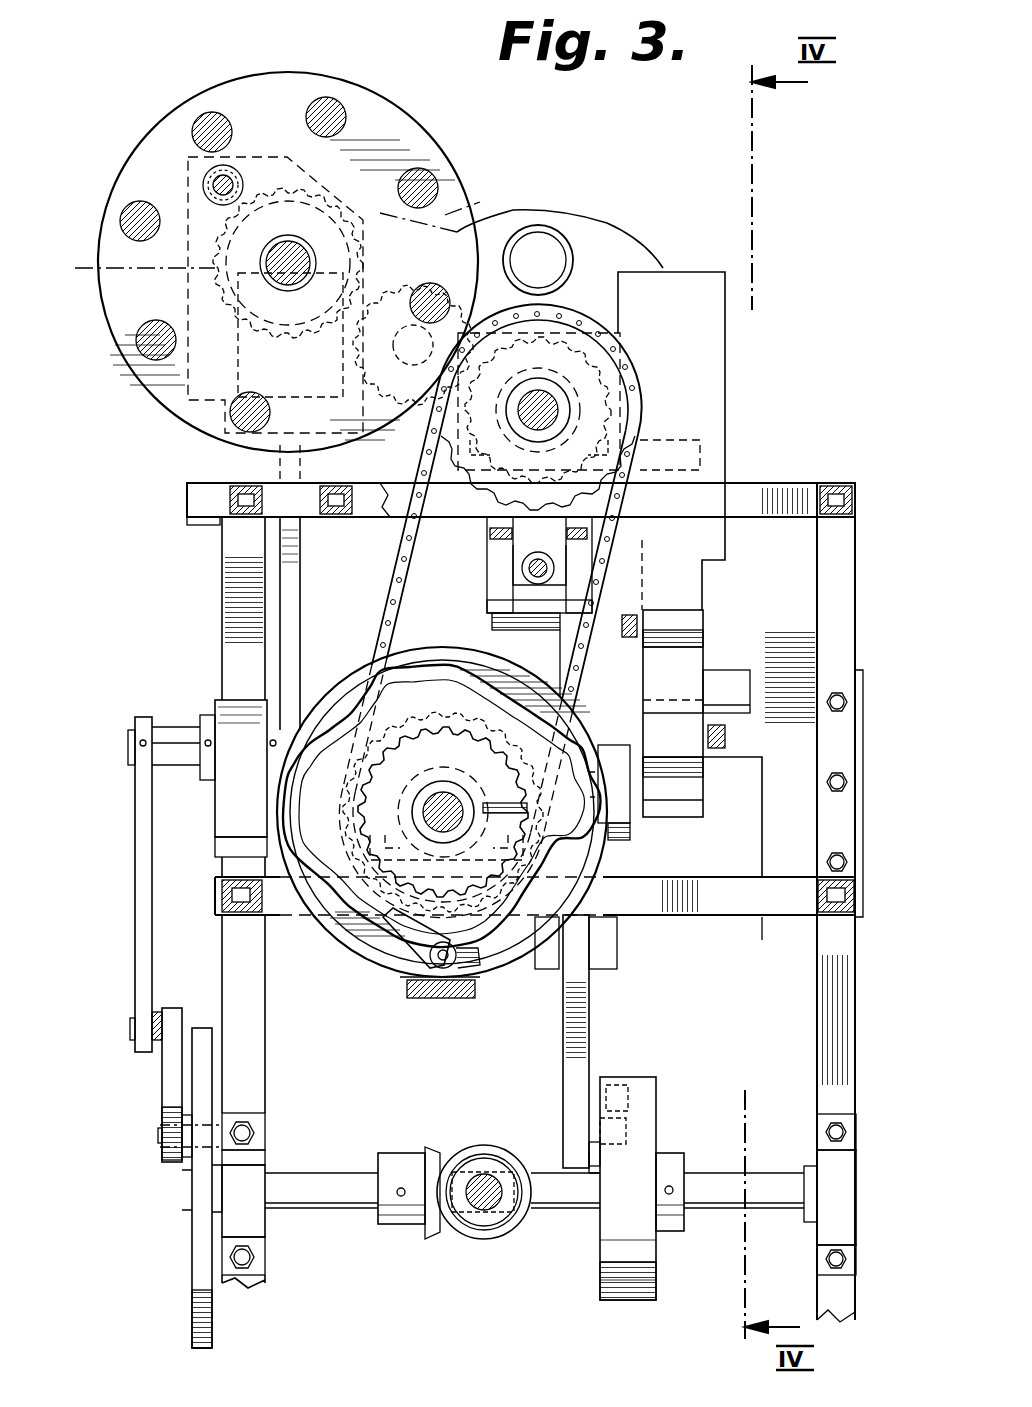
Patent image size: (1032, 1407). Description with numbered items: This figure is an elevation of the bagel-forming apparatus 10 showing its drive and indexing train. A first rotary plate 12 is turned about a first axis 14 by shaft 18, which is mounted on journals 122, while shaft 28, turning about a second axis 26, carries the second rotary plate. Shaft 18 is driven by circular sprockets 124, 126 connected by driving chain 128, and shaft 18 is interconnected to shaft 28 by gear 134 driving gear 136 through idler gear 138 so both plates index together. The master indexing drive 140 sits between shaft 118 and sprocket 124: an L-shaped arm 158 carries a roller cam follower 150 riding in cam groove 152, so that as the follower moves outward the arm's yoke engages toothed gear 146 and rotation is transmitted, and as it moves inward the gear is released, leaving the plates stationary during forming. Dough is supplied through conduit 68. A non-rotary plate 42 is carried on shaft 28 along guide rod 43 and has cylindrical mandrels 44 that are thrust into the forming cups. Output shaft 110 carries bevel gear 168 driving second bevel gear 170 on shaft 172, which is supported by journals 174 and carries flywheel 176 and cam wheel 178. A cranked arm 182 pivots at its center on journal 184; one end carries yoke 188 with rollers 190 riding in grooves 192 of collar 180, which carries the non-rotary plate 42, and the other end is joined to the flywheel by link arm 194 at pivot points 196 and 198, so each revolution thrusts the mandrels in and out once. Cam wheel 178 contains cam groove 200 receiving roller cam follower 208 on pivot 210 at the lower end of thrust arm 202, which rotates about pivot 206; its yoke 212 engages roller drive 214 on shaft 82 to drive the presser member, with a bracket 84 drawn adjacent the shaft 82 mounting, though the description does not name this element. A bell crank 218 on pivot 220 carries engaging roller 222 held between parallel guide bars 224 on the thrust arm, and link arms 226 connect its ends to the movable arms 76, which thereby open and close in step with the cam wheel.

The bagel-forming apparatus 10 is at (826, 444).
The first rotary plate 12 is at (607, 220).
The first axis 14 is at (572, 392).
The shaft 18 is at (562, 410).
The second axis 26 is at (330, 210).
The shaft 28 is at (286, 248).
The non-rotary plate 42 is at (345, 78).
The guide rod 43 is at (224, 180).
The cylindrical mandrels 44 is at (138, 216).
The conduit 68 is at (538, 225).
The movable arms 76 is at (670, 270).
The shaft 82 is at (540, 570).
The bracket 84 is at (540, 537).
The output shaft 110 is at (481, 1175).
The shaft 118 is at (445, 806).
The journals 122 is at (578, 380).
The circular sprocket 124 is at (445, 708).
The circular sprocket 126 is at (640, 462).
The driving chain 128 is at (725, 415).
The gear 134 is at (598, 318).
The gear 136 is at (244, 245).
The idler gear 138 is at (470, 190).
The master indexing drive 140 is at (330, 674).
The toothed gear 146 is at (400, 850).
The roller cam follower 150 is at (462, 975).
The cam groove 152 is at (503, 932).
The L-shaped arm 158 is at (403, 940).
The bevel gear 168 is at (473, 1239).
The second bevel gear 170 is at (397, 1215).
The shaft 172 is at (330, 1173).
The journals 174 is at (843, 1175).
The flywheel 176 is at (194, 1312).
The cam wheel 178 is at (632, 1300).
The collar 180 is at (277, 313).
The cranked arm 182 is at (290, 568).
The journal 184 is at (228, 720).
The yoke 188 is at (230, 378).
The rollers 190 is at (188, 297).
The grooves 192 is at (202, 186).
The link arm 194 is at (163, 1082).
The pivot point 196 is at (155, 1015).
The pivot point 198 is at (160, 1140).
The cam groove 200 is at (625, 1090).
The thrust arm 202 is at (575, 983).
The pivot 206 is at (525, 902).
The roller cam follower 208 is at (598, 1138).
The pivot 210 is at (591, 1153).
The yoke 212 is at (503, 602).
The roller drive 214 is at (487, 550).
The bell crank 218 is at (690, 616).
The pivot 220 is at (683, 672).
The engaging roller 222 is at (705, 790).
The parallel guide bars 224 is at (620, 842).
The link arms 226 is at (632, 615).